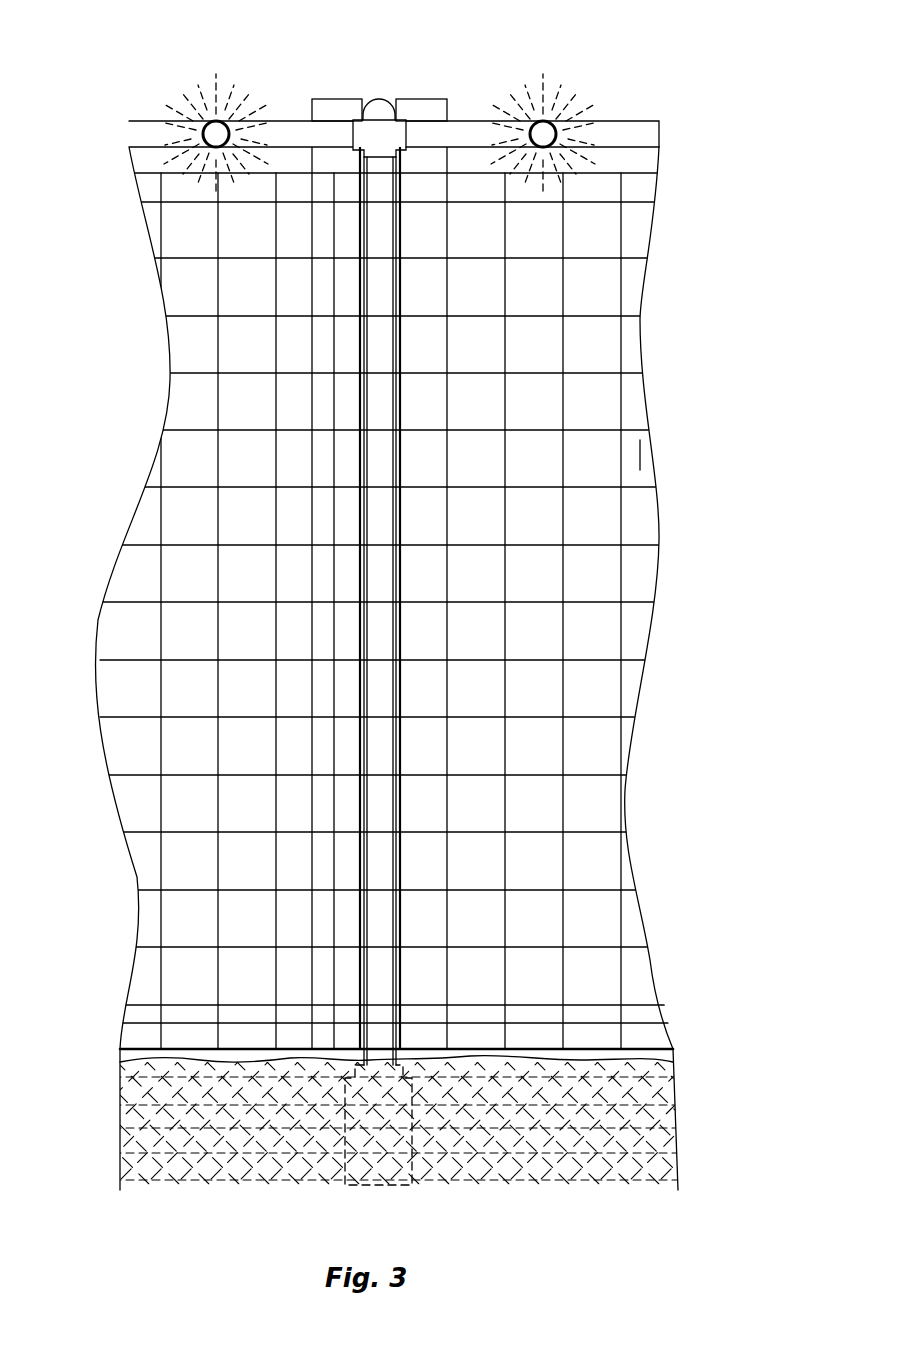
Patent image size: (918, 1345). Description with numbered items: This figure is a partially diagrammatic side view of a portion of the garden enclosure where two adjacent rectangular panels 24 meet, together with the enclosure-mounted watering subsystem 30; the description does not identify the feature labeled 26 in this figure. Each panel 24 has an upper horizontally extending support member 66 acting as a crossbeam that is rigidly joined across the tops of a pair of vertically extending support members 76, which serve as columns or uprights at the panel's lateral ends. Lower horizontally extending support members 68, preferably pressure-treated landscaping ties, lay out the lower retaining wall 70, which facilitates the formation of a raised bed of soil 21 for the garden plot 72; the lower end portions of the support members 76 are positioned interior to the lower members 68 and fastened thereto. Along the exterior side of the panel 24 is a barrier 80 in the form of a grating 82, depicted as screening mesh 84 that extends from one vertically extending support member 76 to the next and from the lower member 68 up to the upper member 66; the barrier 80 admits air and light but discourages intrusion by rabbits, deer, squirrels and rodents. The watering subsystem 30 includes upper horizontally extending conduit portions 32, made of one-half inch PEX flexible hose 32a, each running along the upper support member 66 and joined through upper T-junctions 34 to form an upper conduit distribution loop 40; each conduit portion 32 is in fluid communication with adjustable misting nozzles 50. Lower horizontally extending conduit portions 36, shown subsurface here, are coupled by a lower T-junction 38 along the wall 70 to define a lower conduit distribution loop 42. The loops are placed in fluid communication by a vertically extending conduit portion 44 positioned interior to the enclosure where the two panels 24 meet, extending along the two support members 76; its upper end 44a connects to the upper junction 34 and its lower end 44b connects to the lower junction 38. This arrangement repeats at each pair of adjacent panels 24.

The soil 21 is at (615, 1065).
The rectangular panel 24 is at (145, 119).
The panel 26 is at (418, 472).
The enclosure-mounted watering subsystem 30 is at (403, 97).
The upper horizontally extending conduit portion 32 is at (297, 130).
The PEX flexible hose 32a is at (152, 178).
The upper T-junction 34 is at (378, 112).
The lower horizontally extending conduit portion 36 is at (418, 1030).
The lower T-junction 38 is at (378, 1095).
The upper conduit distribution loop 40 is at (380, 78).
The lower conduit distribution loop 42 is at (142, 1112).
The vertically extending conduit portion 44 is at (365, 565).
The upper end 44a is at (388, 245).
The lower end 44b is at (372, 1000).
The misting nozzle 50 is at (215, 120).
The upper horizontally extending support member 66 is at (617, 162).
The lower horizontally extending support member 68 is at (403, 1084).
The lower retaining wall 70 is at (684, 1074).
The garden plot 72 is at (648, 1176).
The vertically extending support member 76 is at (338, 99).
The barrier 80 is at (632, 455).
The grating 82 is at (502, 298).
The screening mesh 84 is at (560, 603).